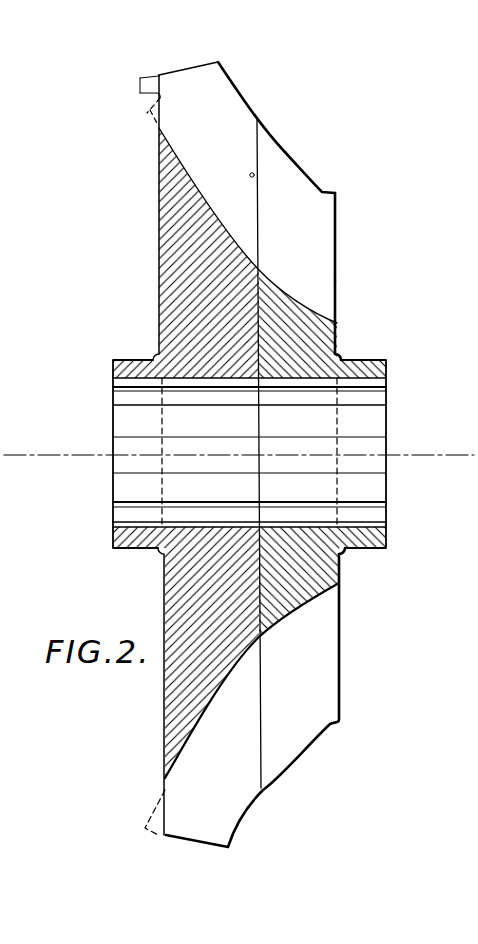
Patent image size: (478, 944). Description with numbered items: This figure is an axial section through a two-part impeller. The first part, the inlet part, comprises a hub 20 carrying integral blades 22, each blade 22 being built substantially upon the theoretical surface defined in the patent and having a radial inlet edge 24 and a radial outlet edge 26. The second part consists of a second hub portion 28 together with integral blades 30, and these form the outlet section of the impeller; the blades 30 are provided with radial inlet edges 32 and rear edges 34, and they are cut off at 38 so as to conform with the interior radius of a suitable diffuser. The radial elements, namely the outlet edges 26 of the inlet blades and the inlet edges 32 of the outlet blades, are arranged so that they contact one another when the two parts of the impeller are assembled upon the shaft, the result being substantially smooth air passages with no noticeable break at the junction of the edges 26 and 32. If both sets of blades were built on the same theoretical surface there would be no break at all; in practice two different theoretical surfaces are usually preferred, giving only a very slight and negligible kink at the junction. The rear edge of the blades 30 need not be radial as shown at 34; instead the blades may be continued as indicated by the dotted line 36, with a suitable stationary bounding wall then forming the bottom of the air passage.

The hub 20 is at (325, 338).
The blades 22 is at (307, 208).
The radial inlet edges 24 is at (337, 258).
The radial outlet edges 26 is at (262, 195).
The second hub portion 28 is at (167, 278).
The blades 30 is at (225, 110).
The radial inlet edges 32 is at (254, 173).
The rear edges 34 is at (140, 93).
The dotted line 36 is at (147, 113).
The cut-off 38 is at (168, 64).